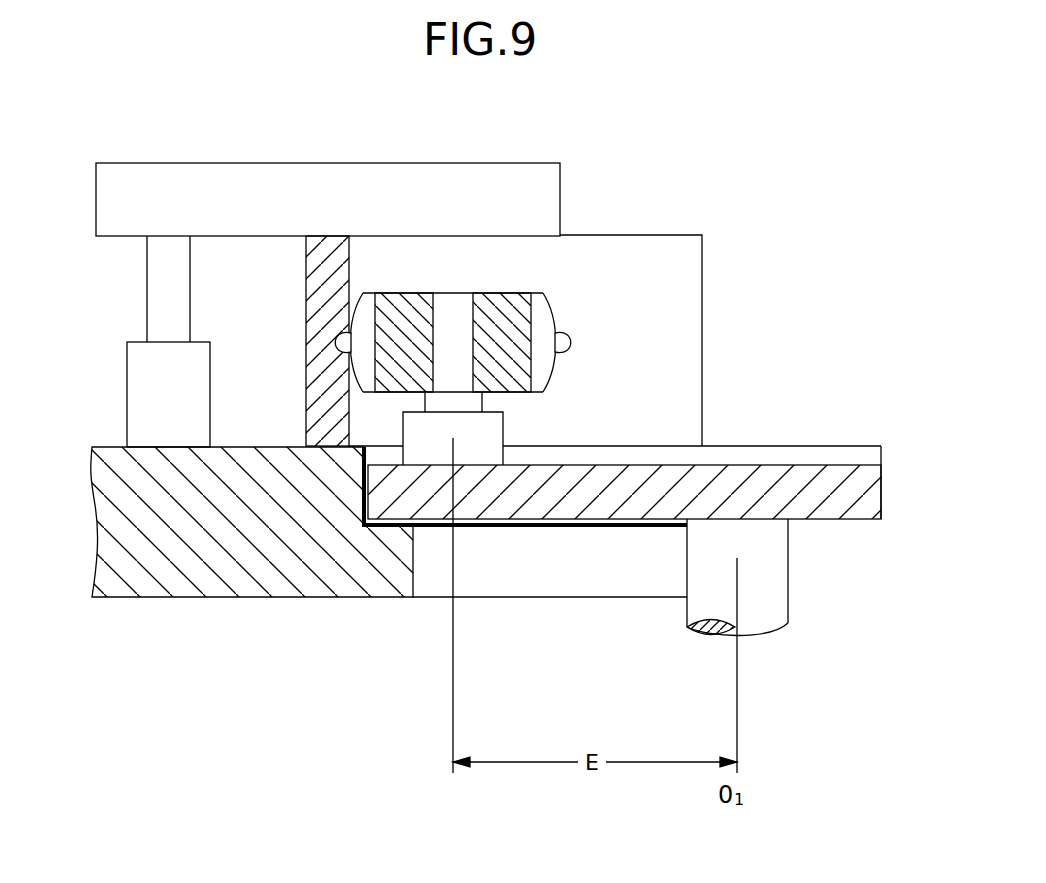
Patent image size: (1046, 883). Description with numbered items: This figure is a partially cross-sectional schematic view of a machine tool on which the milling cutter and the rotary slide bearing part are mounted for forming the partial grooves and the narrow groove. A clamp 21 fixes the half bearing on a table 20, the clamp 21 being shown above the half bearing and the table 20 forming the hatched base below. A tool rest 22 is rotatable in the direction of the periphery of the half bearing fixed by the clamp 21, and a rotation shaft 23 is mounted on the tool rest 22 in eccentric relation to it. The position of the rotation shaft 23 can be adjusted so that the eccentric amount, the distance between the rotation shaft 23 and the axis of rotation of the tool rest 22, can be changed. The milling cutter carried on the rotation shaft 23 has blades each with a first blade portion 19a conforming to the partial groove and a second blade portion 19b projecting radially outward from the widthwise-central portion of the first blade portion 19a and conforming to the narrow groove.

The clamp 21 is at (366, 163).
The table 20 is at (110, 447).
The tool rest 22 is at (881, 464).
The rotation shaft 23 is at (473, 340).
The first blade portion 19a is at (556, 318).
The second blade portion 19b is at (572, 343).